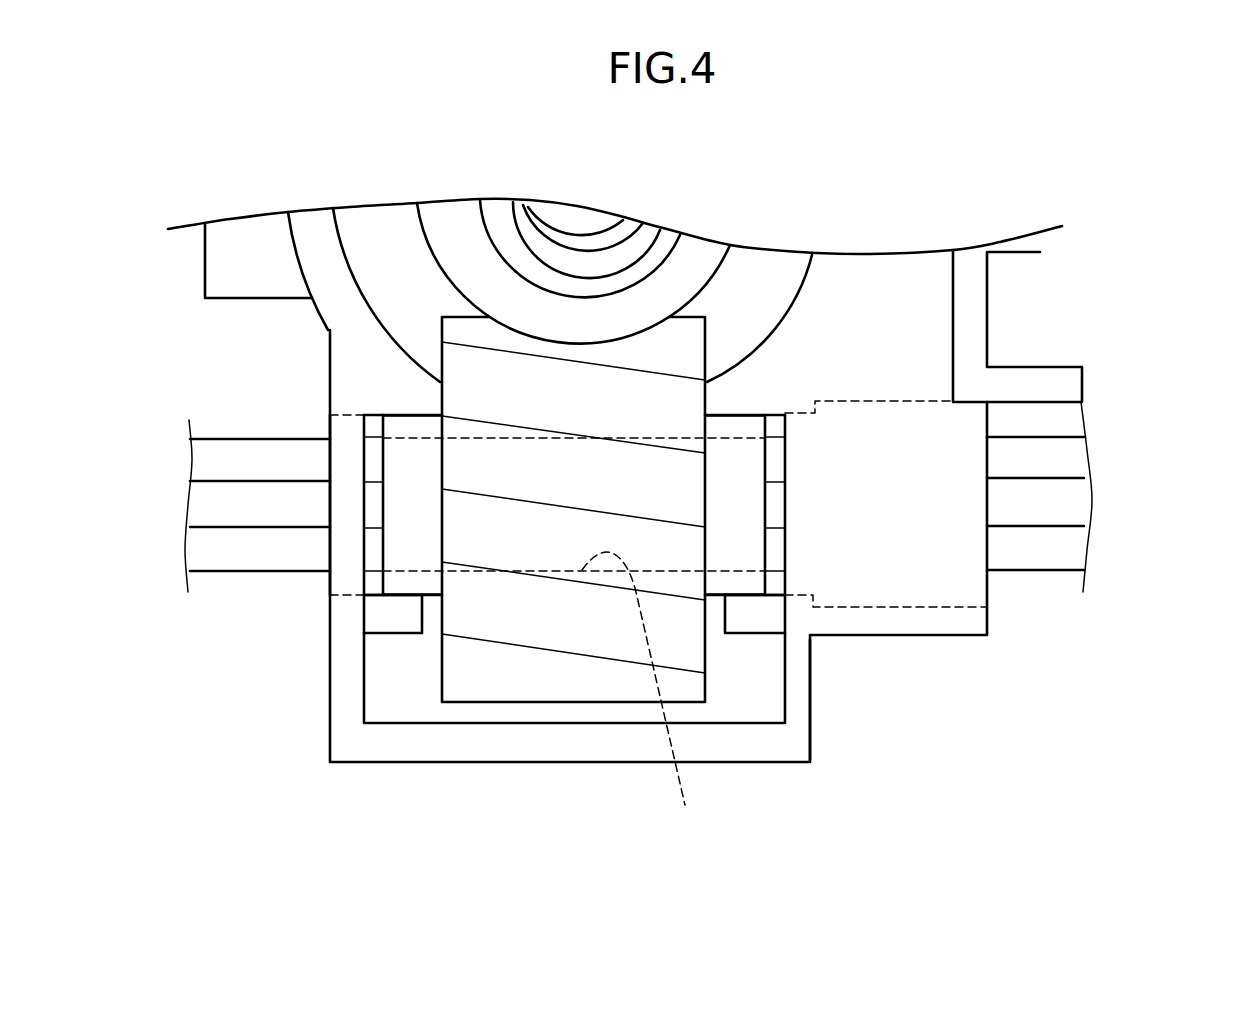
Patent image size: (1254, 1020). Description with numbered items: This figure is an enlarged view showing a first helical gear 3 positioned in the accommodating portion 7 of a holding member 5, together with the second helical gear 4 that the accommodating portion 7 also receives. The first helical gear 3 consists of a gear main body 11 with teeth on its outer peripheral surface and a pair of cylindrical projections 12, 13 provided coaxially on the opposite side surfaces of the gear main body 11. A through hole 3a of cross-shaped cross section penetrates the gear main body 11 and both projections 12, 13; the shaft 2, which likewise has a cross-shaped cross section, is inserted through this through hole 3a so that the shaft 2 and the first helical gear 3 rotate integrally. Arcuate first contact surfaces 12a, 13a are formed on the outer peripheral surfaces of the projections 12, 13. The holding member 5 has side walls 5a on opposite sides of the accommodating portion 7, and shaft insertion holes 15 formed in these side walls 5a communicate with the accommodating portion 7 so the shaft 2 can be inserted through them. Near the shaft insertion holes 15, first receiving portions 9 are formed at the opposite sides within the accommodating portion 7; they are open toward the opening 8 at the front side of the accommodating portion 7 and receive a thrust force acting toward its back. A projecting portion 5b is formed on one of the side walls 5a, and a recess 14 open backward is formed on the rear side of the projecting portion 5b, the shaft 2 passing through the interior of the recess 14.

The shaft 2 is at (243, 505).
The first helical gear 3 is at (580, 677).
The through hole 3a is at (647, 695).
The second helical gear 4 is at (462, 267).
The holding member 5 is at (1132, 262).
The side wall 5a is at (327, 583).
The projecting portion 5b is at (958, 433).
The accommodating portion 7 is at (403, 698).
The opening 8 is at (364, 690).
The first receiving portion 9 is at (393, 623).
The gear main body 11 is at (508, 668).
The first projection 12 is at (405, 540).
The first contact surface 12a is at (403, 463).
The second projection 13 is at (728, 537).
The first contact surface 13a is at (735, 507).
The recess 14 is at (958, 497).
The shaft insertion hole 15 is at (337, 513).